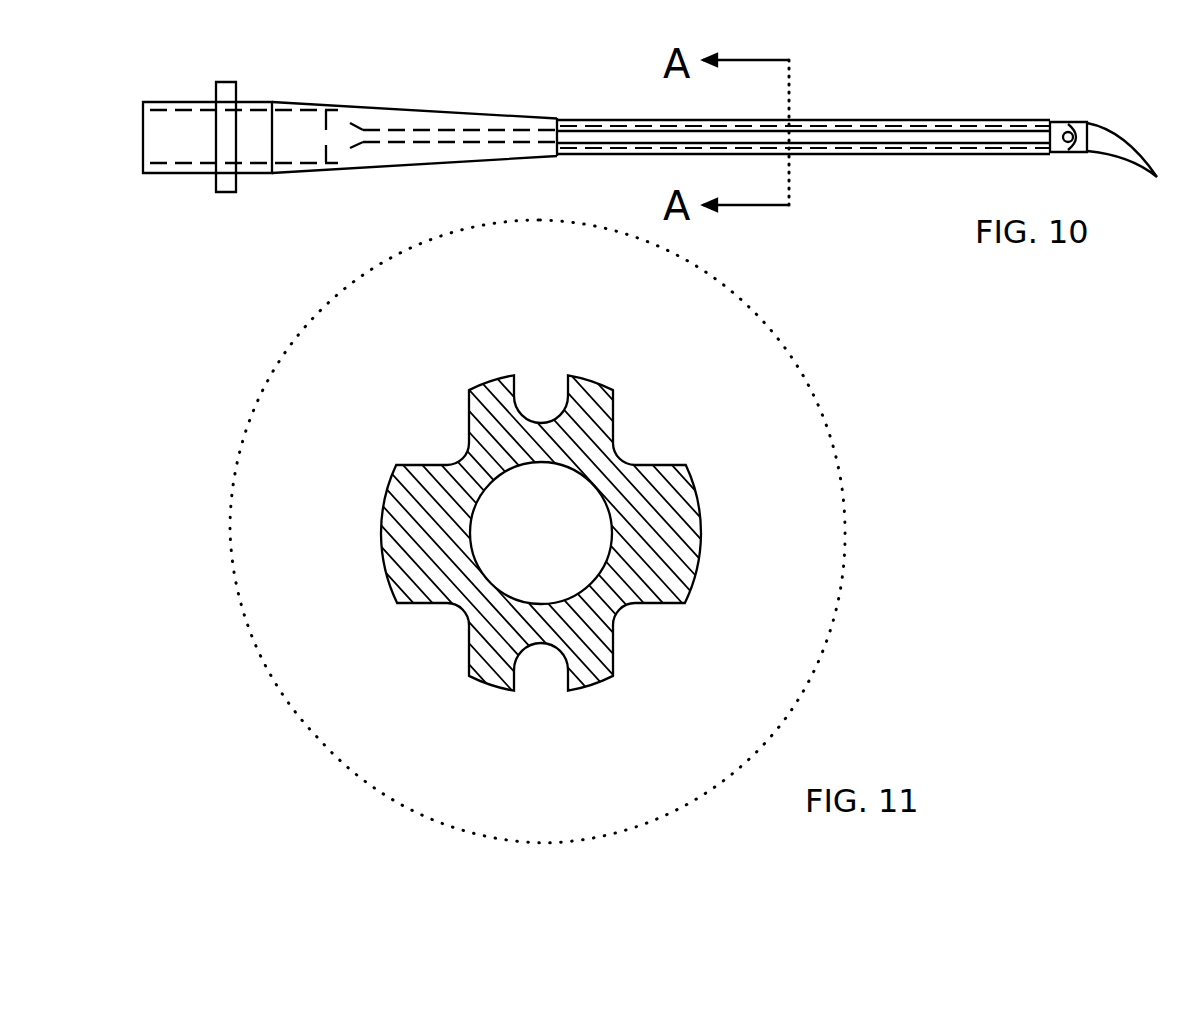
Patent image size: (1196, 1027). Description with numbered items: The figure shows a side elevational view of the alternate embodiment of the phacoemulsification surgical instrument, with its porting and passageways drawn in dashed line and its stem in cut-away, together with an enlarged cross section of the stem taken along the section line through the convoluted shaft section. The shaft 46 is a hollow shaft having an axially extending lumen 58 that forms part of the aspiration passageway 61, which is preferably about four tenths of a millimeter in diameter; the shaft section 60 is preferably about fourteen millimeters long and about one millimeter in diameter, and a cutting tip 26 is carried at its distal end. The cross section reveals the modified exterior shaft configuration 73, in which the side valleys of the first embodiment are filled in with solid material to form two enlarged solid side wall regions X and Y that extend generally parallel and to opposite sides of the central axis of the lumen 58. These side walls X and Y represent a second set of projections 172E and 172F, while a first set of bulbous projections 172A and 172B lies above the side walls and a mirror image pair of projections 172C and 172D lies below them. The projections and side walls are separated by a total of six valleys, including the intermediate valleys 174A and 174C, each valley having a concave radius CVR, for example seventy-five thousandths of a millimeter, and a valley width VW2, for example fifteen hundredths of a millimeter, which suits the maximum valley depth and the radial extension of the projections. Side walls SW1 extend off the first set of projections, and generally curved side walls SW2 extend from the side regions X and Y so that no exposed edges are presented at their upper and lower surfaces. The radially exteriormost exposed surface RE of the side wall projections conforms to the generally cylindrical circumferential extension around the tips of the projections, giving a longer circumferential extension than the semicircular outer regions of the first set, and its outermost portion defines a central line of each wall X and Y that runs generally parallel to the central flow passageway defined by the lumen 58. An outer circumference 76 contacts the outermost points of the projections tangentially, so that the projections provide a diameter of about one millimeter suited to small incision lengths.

In FIG. 10, the shaft 46 is at (940, 121).
In FIG. 10, the shaft section 60 is at (855, 120).
In FIG. 11, the shaft section 60 is at (462, 670).
In FIG. 10, the hook blade tip 26 is at (1121, 136).
In FIG. 11, the outer surface of shaft 76 is at (666, 647).
In FIG. 11, the aspiration passageway 61 is at (574, 525).
In FIG. 11, the lumen 58 is at (468, 548).
In FIG. 11, the first set projection 172A is at (493, 394).
In FIG. 11, the first set projection 172B is at (600, 393).
In FIG. 11, the first set projection 172C is at (487, 684).
In FIG. 11, the first set projection 172D is at (597, 680).
In FIG. 11, the second set projection 172E is at (703, 517).
In FIG. 11, the second set projection 172F is at (381, 507).
In FIG. 11, the valley 174A is at (633, 422).
In FIG. 11, the valley 174C is at (470, 437).
In FIG. 11, the valley width VW2 is at (568, 375).
In FIG. 11, the side walls of first set projections SW1 is at (622, 652).
In FIG. 11, the side walls of second set projections SW2 is at (613, 445).
In FIG. 11, the valley concave radius CVR is at (683, 467).
In FIG. 11, the radially exteriormost exposed surface RE is at (702, 517).
In FIG. 11, the side wall X is at (381, 523).
In FIG. 11, the side wall Y is at (697, 575).
In FIG. 11, the exterior shaft configuration 73 is at (385, 485).